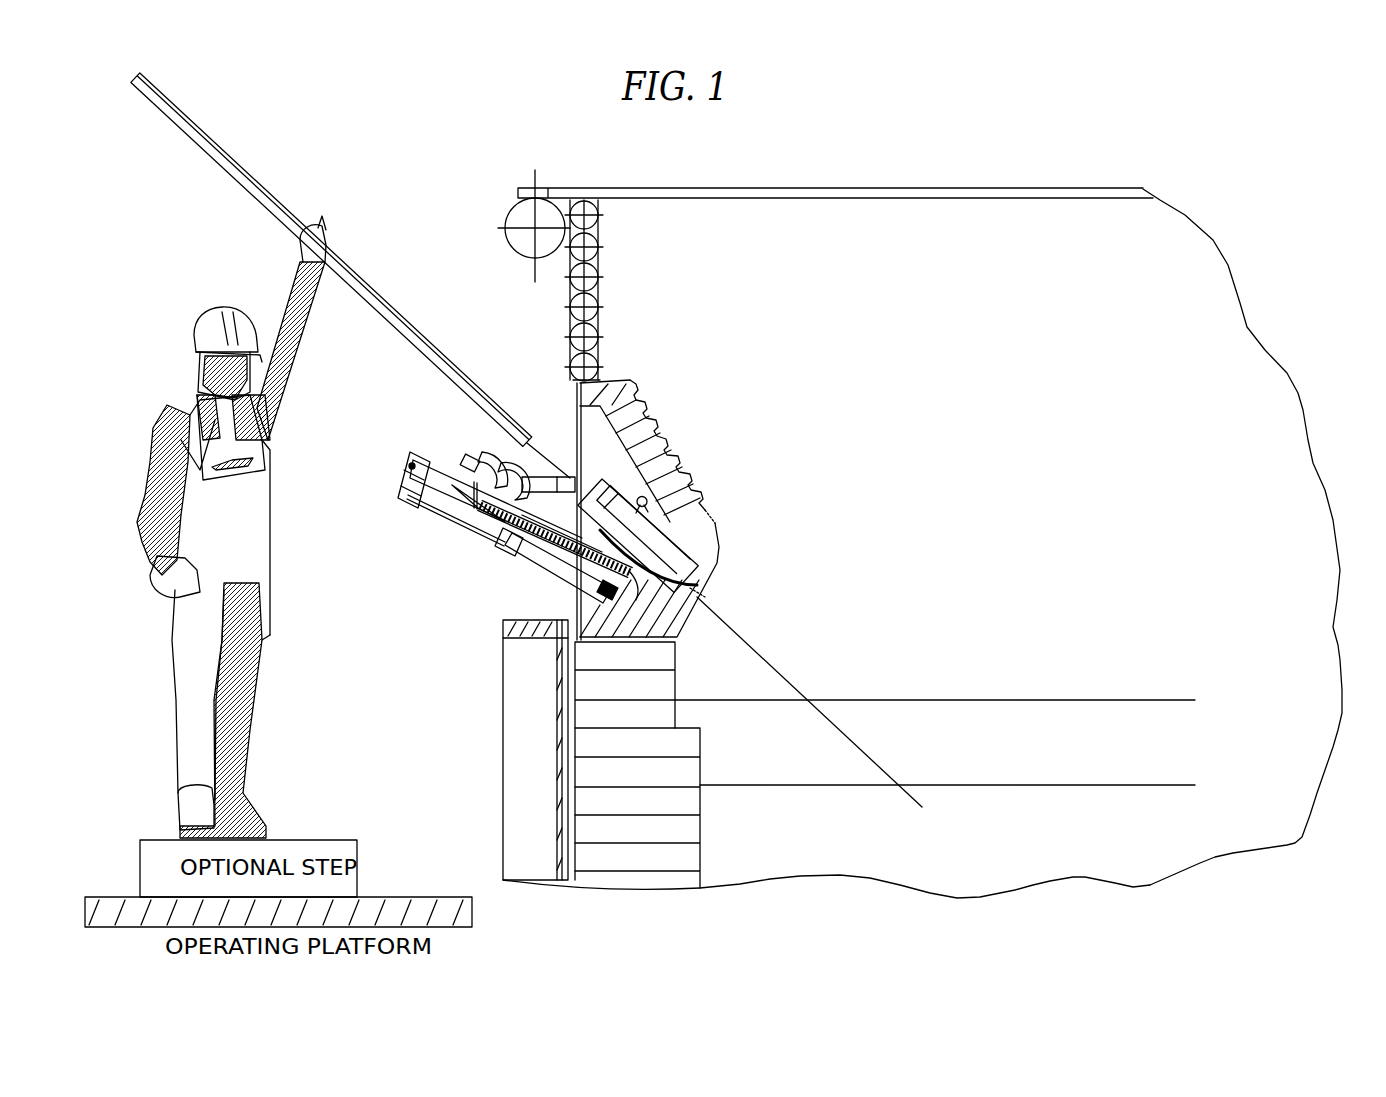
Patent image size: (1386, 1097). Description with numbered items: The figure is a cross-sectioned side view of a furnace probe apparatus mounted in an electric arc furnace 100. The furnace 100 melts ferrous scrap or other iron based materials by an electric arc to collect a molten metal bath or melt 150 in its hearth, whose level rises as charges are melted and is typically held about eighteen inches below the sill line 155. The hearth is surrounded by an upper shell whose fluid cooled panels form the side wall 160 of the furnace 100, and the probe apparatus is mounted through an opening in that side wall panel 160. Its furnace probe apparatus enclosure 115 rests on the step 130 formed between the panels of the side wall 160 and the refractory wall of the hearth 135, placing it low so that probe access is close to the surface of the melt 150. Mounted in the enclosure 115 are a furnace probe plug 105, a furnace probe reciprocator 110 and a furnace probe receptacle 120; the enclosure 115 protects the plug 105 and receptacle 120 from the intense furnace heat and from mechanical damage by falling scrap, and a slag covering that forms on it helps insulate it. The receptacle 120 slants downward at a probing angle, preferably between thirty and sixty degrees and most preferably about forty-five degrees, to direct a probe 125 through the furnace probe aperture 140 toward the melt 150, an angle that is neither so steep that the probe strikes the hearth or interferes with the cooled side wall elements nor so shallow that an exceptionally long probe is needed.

The electric arc furnace 100 is at (937, 316).
The furnace probe plug 105 is at (553, 547).
The furnace probe reciprocator 110 is at (516, 556).
The furnace probe apparatus enclosure 115 is at (681, 447).
The furnace probe receptacle 120 is at (652, 531).
The probe 125 is at (292, 200).
The step 130 is at (610, 645).
The refractory wall of the hearth 135 is at (615, 773).
The furnace probe aperture 140 is at (713, 590).
The molten metal bath or melt 150 is at (877, 858).
The sill line 155 is at (1028, 690).
The side wall 160 is at (612, 255).